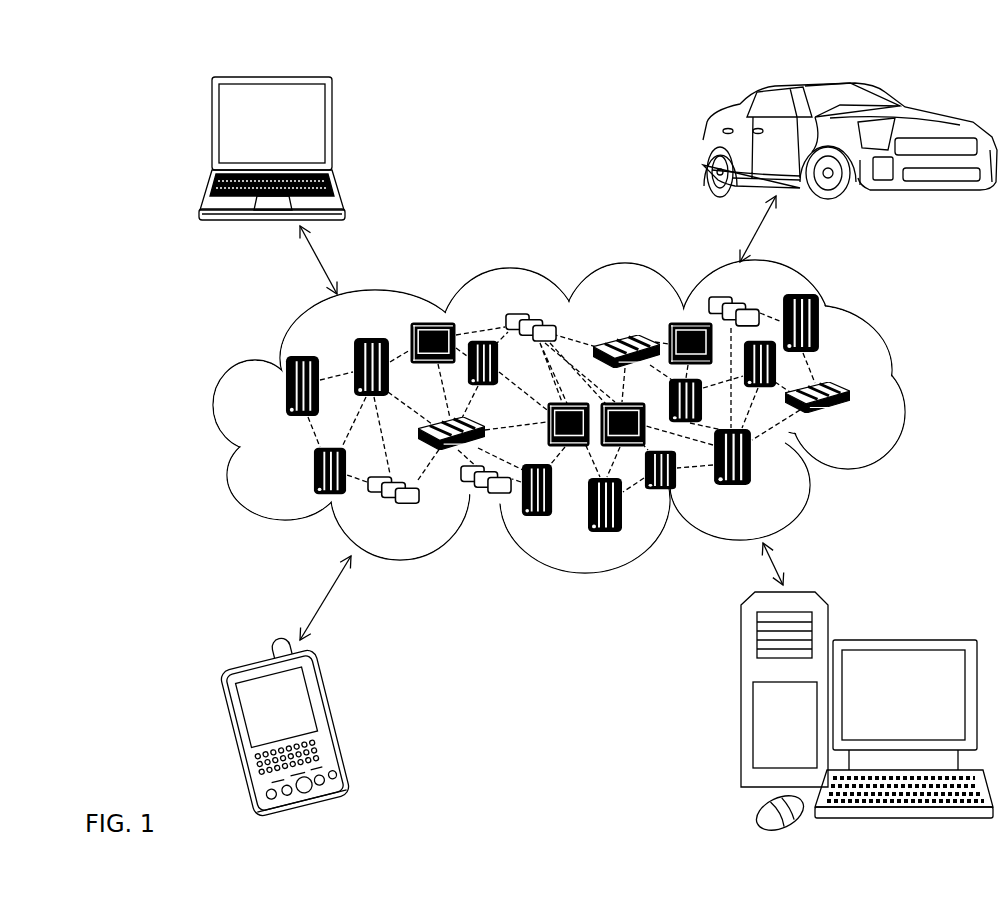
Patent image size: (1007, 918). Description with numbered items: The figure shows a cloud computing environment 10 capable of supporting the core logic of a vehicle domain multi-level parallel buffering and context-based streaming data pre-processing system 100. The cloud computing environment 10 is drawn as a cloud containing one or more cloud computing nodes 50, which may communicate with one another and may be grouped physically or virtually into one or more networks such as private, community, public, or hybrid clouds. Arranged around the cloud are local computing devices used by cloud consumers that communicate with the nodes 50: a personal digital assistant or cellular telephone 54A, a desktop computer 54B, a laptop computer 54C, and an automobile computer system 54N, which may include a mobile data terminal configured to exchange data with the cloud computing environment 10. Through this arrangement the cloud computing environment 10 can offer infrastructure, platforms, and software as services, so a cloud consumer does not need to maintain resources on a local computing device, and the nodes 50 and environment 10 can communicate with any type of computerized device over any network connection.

The vehicle domain multi-level parallel buffering and context-based streaming data p 100 is at (535, 105).
The cloud computing environment 10 is at (903, 392).
The cloud computing nodes 50 is at (858, 422).
The personal digital assistant (PDA) or cellular telephone 54A is at (340, 719).
The desktop computer 54B is at (903, 640).
The laptop computer 54C is at (332, 131).
The automobile computer system 54N is at (708, 146).